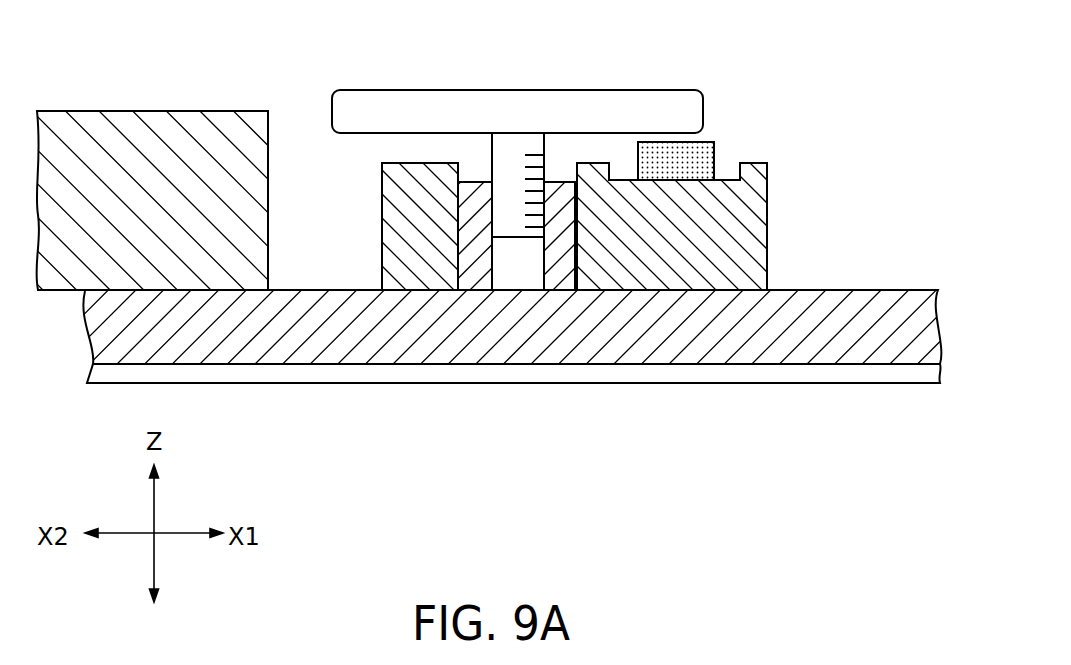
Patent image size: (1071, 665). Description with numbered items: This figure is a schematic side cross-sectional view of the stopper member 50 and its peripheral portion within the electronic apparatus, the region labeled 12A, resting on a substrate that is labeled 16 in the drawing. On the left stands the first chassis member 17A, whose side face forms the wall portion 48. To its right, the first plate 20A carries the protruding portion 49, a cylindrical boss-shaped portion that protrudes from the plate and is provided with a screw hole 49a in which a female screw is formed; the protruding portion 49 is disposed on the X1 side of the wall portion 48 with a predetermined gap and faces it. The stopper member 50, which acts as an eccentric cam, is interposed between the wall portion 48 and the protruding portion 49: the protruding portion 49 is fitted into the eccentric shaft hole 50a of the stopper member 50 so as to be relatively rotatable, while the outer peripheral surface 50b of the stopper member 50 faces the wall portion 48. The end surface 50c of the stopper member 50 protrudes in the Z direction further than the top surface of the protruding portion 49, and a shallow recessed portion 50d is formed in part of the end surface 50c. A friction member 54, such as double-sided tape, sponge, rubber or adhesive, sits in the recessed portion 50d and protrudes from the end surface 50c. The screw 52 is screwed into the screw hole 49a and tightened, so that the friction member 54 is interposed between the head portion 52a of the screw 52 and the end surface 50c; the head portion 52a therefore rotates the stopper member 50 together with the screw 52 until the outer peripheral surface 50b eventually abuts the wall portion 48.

The head unit / mounting structure 12A is at (101, 20).
The first chassis member 17A is at (144, 109).
The wall portion 48 is at (268, 156).
The screw 52 is at (386, 89).
The head portion 52a is at (507, 102).
The protruding portion 49 is at (560, 182).
The screw hole 49a is at (497, 263).
The friction member 54 is at (678, 150).
The stopper member 50 is at (778, 221).
The shaft hole 50a is at (490, 250).
The outer peripheral surface 50b is at (382, 245).
The end surface 50c is at (757, 163).
The recessed portion 50d is at (723, 178).
The first plate 20A is at (648, 352).
The base layer 16 is at (822, 388).